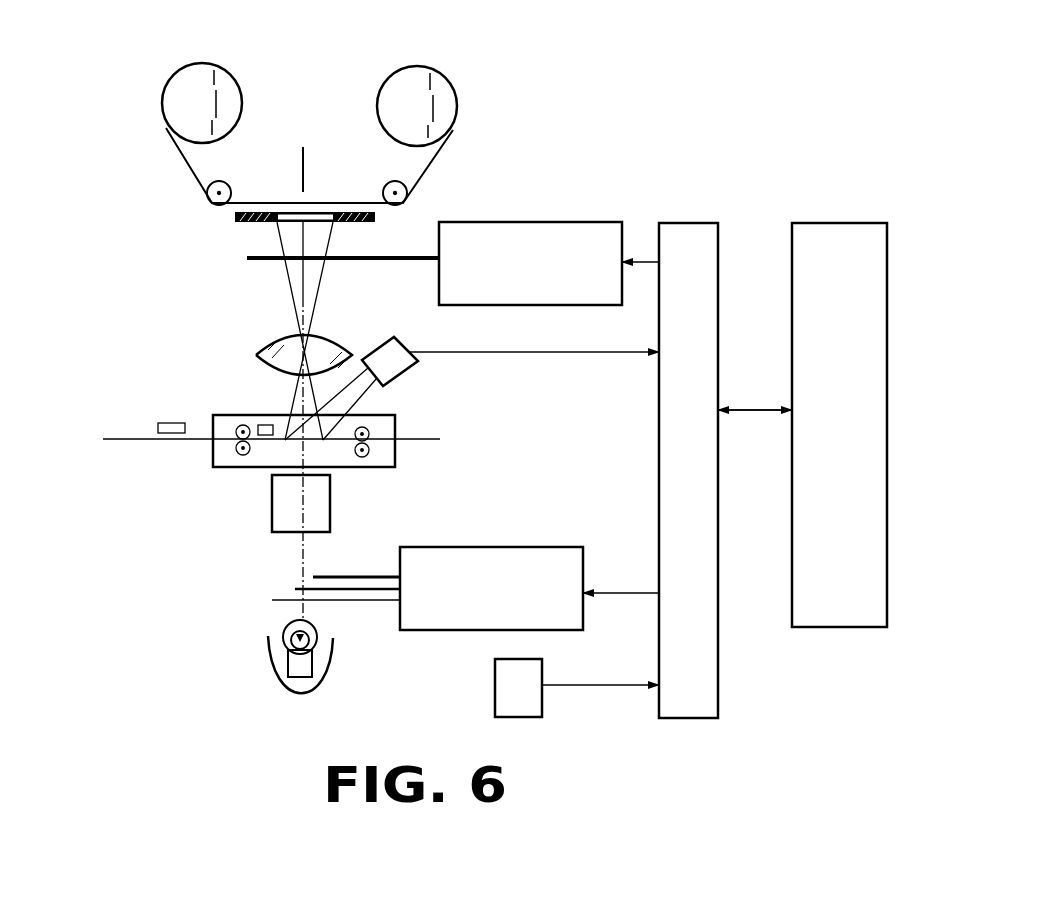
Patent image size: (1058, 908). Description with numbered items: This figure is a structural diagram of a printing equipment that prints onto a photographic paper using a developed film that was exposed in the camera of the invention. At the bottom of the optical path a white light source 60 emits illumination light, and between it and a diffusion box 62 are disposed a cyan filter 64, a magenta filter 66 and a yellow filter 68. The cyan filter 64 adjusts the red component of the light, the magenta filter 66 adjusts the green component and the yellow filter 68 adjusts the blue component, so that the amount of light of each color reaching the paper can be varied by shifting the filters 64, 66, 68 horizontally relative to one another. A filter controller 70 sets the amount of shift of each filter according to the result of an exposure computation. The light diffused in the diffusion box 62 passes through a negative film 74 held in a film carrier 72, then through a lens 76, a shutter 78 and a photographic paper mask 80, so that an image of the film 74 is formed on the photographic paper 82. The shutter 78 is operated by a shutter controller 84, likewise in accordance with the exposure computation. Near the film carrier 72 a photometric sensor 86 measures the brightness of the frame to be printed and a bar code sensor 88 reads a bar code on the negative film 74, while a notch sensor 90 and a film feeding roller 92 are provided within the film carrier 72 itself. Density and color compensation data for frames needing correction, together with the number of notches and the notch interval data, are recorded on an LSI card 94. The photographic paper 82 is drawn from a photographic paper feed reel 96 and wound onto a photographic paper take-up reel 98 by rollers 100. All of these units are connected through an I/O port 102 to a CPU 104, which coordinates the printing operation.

The white light source 60 is at (272, 643).
The diffusion box 62 is at (272, 526).
The cyan filter 64 is at (272, 600).
The magenta filter 66 is at (360, 591).
The yellow filter 68 is at (340, 577).
The filter controller 70 is at (553, 547).
The film carrier 72 is at (395, 453).
The negative film 74 is at (120, 440).
The lens 76 is at (256, 355).
The shutter 78 is at (247, 259).
The photographic paper mask 80 is at (375, 218).
The photographic paper 82 is at (432, 163).
The shutter controller 84 is at (575, 222).
The photometric sensor 86 is at (393, 338).
The bar code sensor 88 is at (170, 423).
The notch sensor 90 is at (265, 425).
The film feeding roller 92 is at (370, 430).
The LSI card 94 is at (542, 702).
The photographic paper feed reel 96 is at (192, 66).
The photographic paper take-up reel 98 is at (435, 70).
The rollers 100 is at (230, 182).
The I/O port 102 is at (718, 698).
The CPU 104 is at (848, 628).